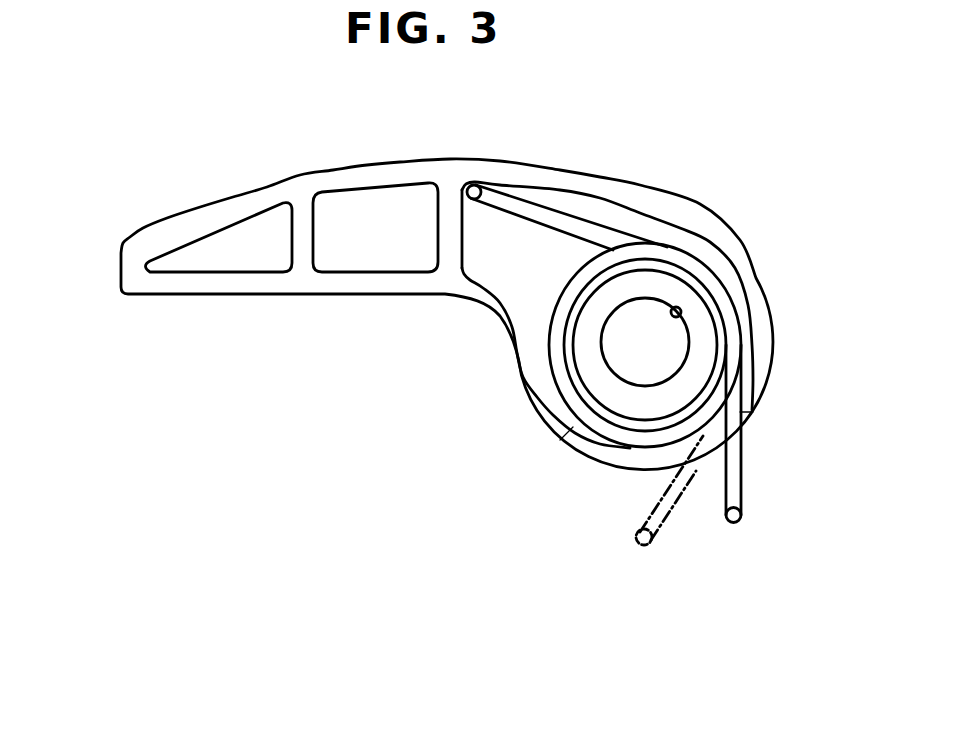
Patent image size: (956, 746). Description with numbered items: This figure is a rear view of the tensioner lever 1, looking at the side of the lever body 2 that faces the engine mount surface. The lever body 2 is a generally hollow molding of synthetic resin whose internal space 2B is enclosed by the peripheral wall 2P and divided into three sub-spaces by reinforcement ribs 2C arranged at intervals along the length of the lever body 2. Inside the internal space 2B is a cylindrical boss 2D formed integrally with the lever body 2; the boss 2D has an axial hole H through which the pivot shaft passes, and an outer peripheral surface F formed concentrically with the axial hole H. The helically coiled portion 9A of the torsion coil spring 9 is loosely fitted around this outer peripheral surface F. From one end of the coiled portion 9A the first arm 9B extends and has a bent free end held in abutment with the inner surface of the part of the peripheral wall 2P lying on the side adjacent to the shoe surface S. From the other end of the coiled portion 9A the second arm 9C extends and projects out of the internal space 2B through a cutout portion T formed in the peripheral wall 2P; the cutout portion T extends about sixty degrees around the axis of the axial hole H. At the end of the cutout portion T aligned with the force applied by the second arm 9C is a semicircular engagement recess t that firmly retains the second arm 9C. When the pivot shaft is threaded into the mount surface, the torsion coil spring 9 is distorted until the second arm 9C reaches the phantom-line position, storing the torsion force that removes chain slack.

The tensioner lever 1 is at (468, 375).
The lever body 2 is at (178, 298).
The internal space 2B is at (238, 263).
The reinforcement ribs 2C is at (307, 235).
The cylindrical boss 2D is at (710, 345).
The peripheral wall 2P is at (537, 390).
The torsion coil spring 9 is at (634, 228).
The helically coiled portion 9A is at (687, 262).
The first arm 9B is at (537, 207).
The second arm 9C is at (742, 490).
The outer peripheral surface F is at (613, 273).
The axial hole H is at (680, 318).
The shoe surface S is at (302, 173).
The cutout portion T is at (612, 455).
The semicircular engagement recess t is at (753, 412).